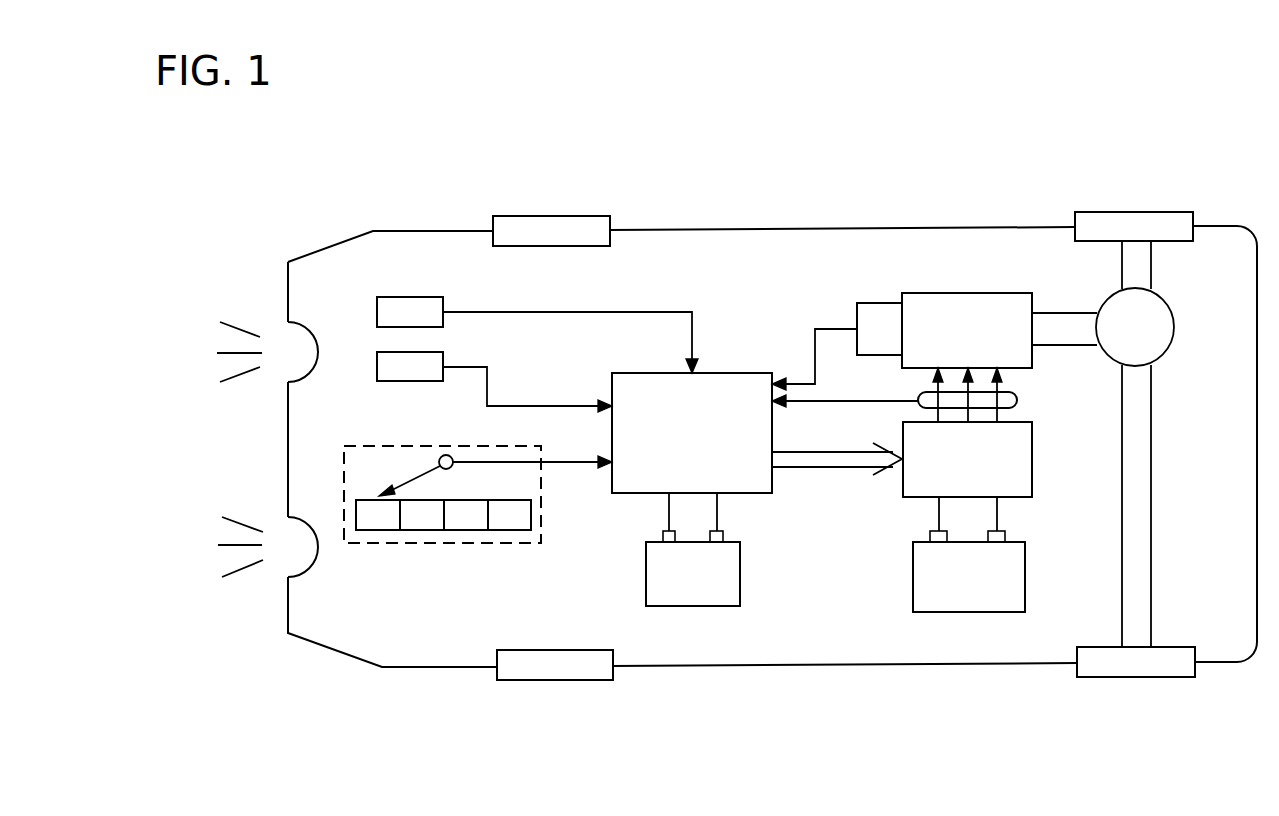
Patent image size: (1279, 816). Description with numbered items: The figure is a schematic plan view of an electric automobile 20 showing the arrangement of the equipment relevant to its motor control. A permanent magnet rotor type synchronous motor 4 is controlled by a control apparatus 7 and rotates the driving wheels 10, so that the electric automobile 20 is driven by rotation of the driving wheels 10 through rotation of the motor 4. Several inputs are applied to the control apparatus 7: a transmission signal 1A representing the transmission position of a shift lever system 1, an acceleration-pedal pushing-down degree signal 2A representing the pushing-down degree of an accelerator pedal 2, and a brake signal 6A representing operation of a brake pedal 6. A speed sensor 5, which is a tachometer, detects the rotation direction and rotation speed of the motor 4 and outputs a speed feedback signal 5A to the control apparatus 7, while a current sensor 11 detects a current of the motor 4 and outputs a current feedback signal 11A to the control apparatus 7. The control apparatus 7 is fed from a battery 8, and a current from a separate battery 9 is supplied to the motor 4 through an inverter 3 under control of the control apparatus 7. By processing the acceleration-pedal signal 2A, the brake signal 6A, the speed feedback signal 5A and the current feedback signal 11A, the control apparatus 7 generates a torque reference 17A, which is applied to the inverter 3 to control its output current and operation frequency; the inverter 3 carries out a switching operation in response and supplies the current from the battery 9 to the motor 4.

The shift lever system 1 is at (470, 550).
The transmission signal 1A is at (561, 472).
The accelerator pedal 2 is at (396, 297).
The acceleration-pedal pushing-down degree signal 2A is at (568, 302).
The inverter 3 is at (1032, 484).
The motor 4 is at (973, 293).
The speed sensor 5 is at (877, 303).
The speed feedback signal 5A is at (811, 354).
The brake pedal 6 is at (398, 352).
The brake signal 6A is at (513, 398).
The control apparatus 7 is at (612, 494).
The battery 8 is at (740, 596).
The battery 9 is at (913, 601).
The driving wheels 10 is at (531, 216).
The current sensor 11 is at (1017, 406).
The current feedback signal 11A is at (887, 407).
The torque reference 17A is at (833, 476).
The electric automobile 20 is at (820, 664).